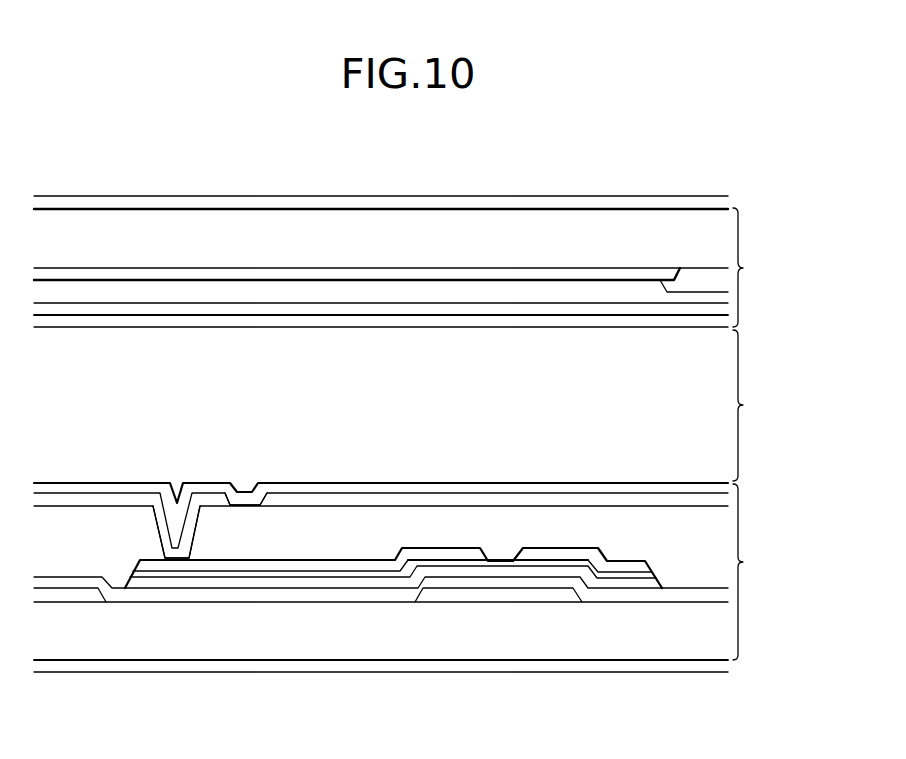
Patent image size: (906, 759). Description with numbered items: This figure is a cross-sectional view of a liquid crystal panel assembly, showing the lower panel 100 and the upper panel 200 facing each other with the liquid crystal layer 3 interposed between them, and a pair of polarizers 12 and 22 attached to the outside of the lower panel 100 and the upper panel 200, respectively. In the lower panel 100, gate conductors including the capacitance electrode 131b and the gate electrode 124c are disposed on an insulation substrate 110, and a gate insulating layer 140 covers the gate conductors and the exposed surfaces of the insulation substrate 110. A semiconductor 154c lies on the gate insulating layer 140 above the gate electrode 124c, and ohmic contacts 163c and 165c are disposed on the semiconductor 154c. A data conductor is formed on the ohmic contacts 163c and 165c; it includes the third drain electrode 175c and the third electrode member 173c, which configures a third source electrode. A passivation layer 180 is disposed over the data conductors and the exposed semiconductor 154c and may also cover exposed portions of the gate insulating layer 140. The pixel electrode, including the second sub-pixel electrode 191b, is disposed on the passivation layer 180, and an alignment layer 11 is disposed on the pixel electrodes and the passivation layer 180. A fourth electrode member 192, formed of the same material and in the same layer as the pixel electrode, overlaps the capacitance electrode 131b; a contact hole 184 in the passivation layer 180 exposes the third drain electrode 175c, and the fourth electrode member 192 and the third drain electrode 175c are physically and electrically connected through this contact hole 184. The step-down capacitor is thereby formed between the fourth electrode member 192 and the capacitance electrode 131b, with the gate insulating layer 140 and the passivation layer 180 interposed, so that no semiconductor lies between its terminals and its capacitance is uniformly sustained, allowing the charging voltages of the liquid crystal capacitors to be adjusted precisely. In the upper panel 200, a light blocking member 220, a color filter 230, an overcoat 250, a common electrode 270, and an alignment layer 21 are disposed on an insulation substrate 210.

The polarizer 22 is at (715, 202).
The upper panel 200 is at (761, 267).
The insulation substrate 210 is at (256, 223).
The light blocking member 220 is at (374, 272).
The color filter 230 is at (690, 278).
The overcoat 250 is at (452, 300).
The common electrode 270 is at (520, 310).
The alignment layer 21 is at (580, 322).
The liquid crystal layer 3 is at (748, 405).
The lower panel 100 is at (757, 572).
The alignment layer 11 is at (610, 492).
The second sub-pixel electrode 191b is at (382, 500).
The fourth electrode member 192 is at (212, 502).
The passivation layer 180 is at (300, 535).
The contact hole 184 is at (164, 528).
The third drain electrode 175c is at (452, 550).
The third electrode member 173c is at (540, 548).
The ohmic contact 165c is at (443, 562).
The ohmic contact 163c is at (565, 562).
The semiconductor 154c is at (533, 572).
The gate insulating layer 140 is at (313, 584).
The capacitance electrode 131b is at (70, 595).
The gate electrode 124c is at (490, 596).
The insulation substrate 110 is at (228, 643).
The polarizer 12 is at (716, 673).